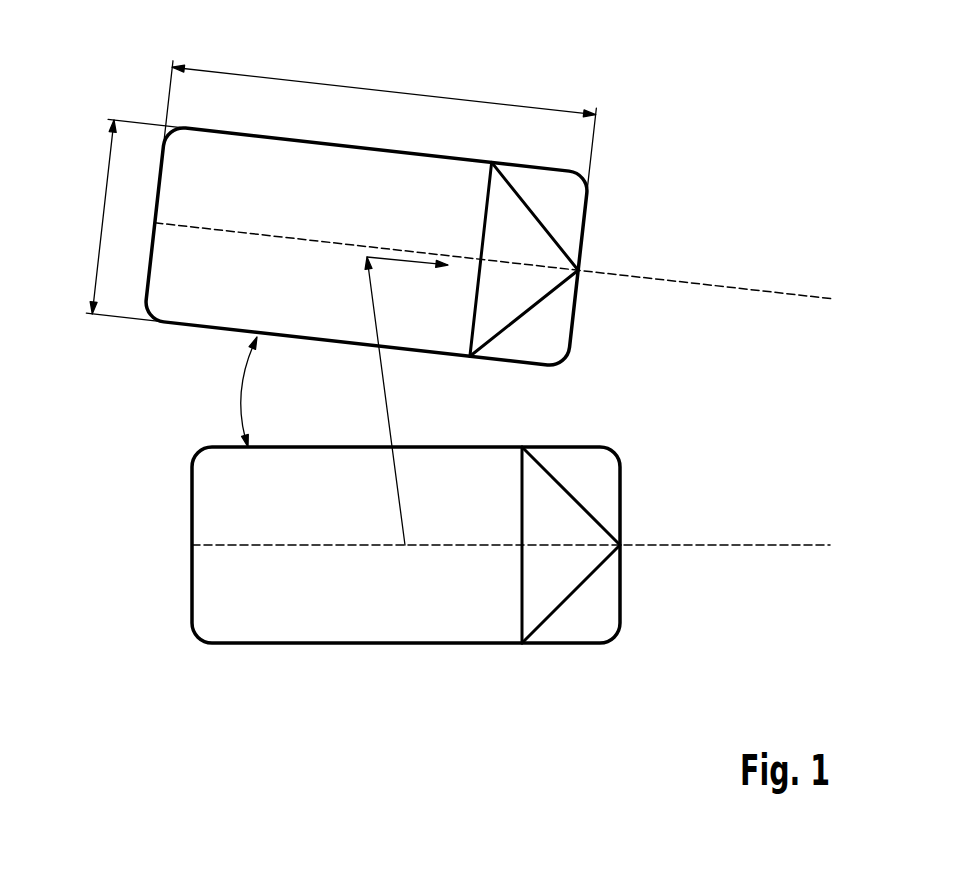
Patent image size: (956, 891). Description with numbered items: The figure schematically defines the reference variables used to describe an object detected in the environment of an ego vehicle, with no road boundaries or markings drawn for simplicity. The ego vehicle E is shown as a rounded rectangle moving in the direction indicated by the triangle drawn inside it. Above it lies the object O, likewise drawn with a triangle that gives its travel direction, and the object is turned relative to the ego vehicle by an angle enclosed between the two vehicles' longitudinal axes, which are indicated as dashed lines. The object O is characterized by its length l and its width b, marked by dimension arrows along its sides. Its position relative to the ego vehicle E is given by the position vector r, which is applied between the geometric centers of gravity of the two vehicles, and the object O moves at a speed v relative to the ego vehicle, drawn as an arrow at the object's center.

The object O is at (585, 228).
The ego vehicle E is at (620, 498).
The length l is at (383, 91).
The width b is at (101, 220).
The speed v is at (402, 252).
The position r is at (388, 398).